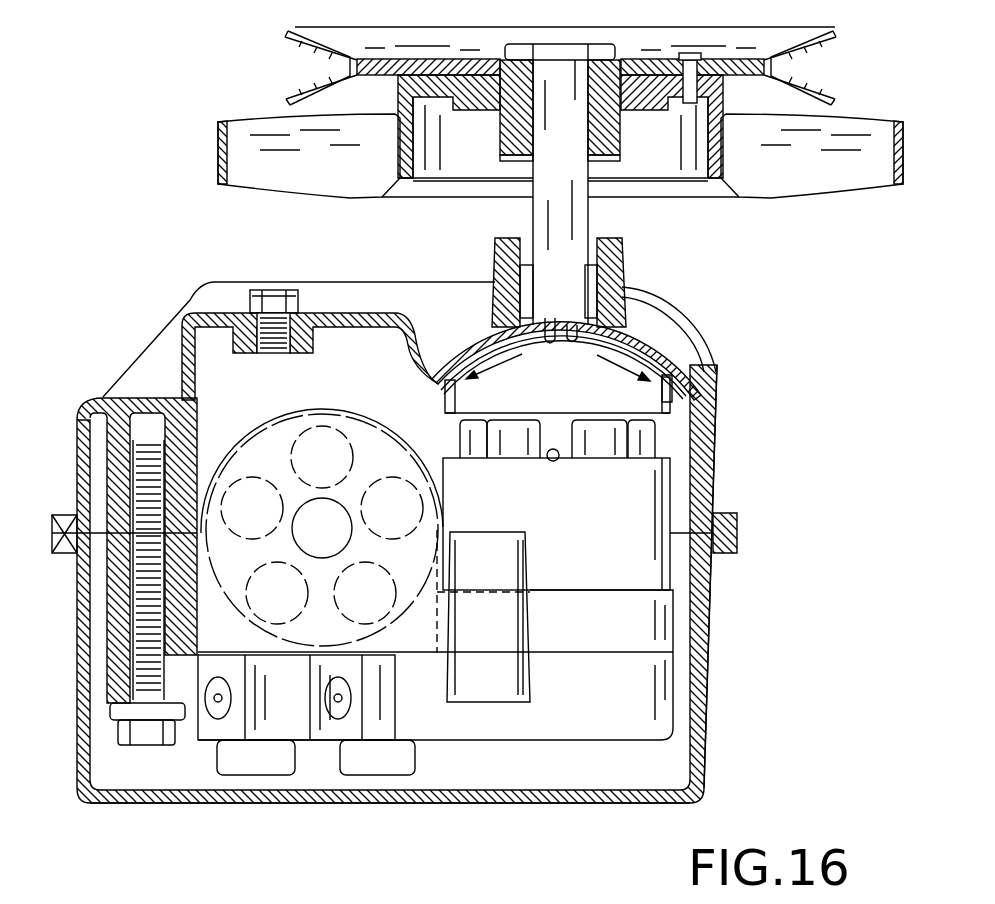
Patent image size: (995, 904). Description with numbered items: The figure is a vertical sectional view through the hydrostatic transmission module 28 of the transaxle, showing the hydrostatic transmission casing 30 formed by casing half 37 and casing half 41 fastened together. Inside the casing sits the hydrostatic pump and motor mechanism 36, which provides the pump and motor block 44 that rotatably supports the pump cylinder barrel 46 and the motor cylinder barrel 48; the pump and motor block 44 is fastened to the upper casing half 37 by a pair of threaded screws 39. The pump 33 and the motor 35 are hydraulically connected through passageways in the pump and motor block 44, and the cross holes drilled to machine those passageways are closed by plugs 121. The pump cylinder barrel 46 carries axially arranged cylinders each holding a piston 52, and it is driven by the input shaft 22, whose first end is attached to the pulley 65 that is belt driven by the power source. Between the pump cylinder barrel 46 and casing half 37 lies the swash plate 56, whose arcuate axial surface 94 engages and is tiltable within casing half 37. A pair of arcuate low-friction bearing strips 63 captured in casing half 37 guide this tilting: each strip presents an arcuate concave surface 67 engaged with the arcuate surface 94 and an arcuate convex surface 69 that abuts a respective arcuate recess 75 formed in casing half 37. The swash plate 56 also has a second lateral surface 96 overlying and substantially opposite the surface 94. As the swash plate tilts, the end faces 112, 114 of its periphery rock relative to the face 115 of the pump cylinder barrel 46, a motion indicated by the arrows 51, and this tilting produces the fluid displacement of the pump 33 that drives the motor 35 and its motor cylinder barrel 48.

The input shaft 22 is at (580, 219).
The hydrostatic transmission module 28 is at (147, 316).
The hydrostatic transmission casing 30 is at (190, 312).
The pump 33 is at (613, 580).
The motor 35 is at (257, 557).
The hydrostatic pump and motor mechanism 36 is at (680, 633).
The casing half 37 is at (716, 466).
The threaded screws 39 is at (128, 744).
The casing half 41 is at (638, 802).
The pump and motor block 44 is at (655, 703).
The pump cylinder barrel 46 is at (665, 517).
The motor cylinder barrel 48 is at (348, 435).
The arrows 51 is at (513, 373).
The piston 52 is at (470, 448).
The swash plate 56 is at (658, 423).
The bearing strips 63 is at (676, 335).
The pulley 65 is at (832, 30).
The arcuate concave surface 67 is at (550, 340).
The arcuate convex surface 69 is at (447, 360).
The arcuate recess 75 is at (628, 332).
The arcuate axial surface 94 is at (561, 344).
The second lateral surface 96 is at (660, 414).
The end face 112 is at (445, 394).
The end face 114 is at (670, 398).
The face 115 is at (553, 462).
The plugs 121 is at (218, 712).